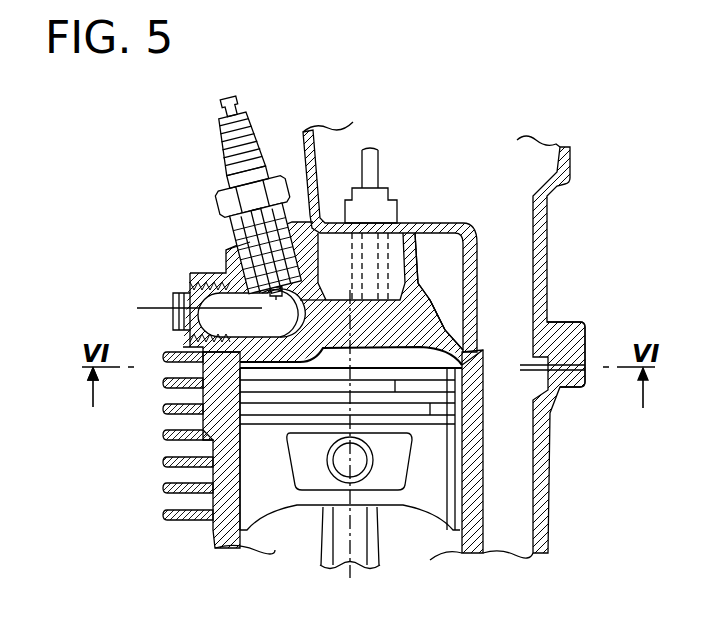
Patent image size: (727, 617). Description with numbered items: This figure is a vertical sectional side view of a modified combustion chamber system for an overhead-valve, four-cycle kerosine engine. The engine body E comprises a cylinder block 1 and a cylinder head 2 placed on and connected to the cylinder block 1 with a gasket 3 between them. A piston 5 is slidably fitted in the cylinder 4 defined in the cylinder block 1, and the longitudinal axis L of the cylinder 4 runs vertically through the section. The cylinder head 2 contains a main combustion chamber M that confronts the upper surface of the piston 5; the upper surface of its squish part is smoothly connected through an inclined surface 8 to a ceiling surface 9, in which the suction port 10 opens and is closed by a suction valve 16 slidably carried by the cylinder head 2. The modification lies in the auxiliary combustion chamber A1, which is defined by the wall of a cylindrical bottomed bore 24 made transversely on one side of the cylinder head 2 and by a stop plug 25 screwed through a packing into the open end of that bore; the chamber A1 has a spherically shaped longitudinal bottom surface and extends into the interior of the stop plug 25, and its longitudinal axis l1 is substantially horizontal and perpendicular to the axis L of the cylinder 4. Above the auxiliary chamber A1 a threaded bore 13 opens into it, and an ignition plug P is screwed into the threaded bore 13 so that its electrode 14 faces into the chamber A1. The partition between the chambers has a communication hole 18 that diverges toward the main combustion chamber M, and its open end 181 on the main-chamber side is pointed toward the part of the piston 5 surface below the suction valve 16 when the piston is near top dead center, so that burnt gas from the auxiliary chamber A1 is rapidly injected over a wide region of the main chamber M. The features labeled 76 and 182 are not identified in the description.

The cylinder block 1 is at (538, 480).
The cylinder head 2 is at (565, 322).
The gasket 3 is at (565, 368).
The cylinder 4 is at (453, 510).
The piston 5 is at (350, 466).
The inclined surface 8 is at (325, 386).
The ceiling surface 9 is at (442, 322).
The suction port 10 is at (456, 291).
The threaded bore 13 is at (246, 256).
The electrode 14 is at (259, 302).
The suction valve 16 is at (372, 172).
The communication hole 18 is at (318, 315).
The cylindrical bottomed bore 24 is at (250, 381).
The stop plug 25 is at (183, 300).
The piston ring 76 is at (238, 378).
The open end of communication hole 181 is at (300, 367).
The recess 182 is at (275, 316).
The ignition plug P is at (232, 193).
The engine body E is at (556, 220).
The main combustion chamber M is at (470, 352).
The longitudinal axis of cylinder L is at (348, 429).
The auxiliary combustion chamber A1 is at (274, 293).
The longitudinal axis of auxiliary combustion chamber l1 is at (187, 310).